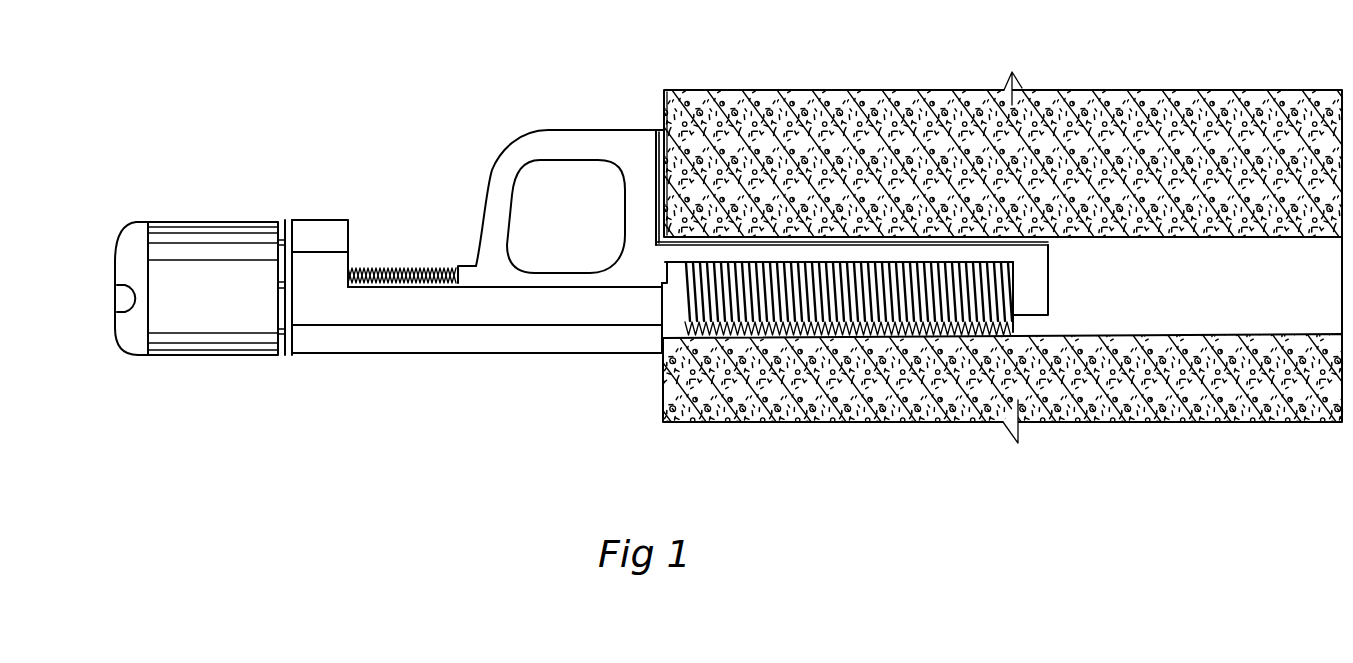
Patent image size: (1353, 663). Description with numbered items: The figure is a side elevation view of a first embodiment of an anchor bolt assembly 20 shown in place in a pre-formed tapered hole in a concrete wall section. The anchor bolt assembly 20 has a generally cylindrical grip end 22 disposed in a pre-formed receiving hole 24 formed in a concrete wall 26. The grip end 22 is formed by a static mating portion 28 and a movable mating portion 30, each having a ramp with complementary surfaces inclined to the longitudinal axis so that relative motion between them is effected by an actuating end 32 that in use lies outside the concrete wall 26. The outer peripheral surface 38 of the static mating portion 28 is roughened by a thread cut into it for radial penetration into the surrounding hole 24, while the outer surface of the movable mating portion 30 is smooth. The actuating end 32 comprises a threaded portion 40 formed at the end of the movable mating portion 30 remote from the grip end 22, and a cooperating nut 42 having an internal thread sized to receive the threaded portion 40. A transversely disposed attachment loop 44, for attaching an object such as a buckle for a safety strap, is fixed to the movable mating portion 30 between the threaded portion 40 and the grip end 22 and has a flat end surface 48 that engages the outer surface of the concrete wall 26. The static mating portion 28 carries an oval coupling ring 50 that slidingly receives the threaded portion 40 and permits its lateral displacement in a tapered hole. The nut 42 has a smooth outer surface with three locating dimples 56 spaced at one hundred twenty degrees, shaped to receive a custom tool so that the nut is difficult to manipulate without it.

The anchor bolt assembly 20 is at (460, 42).
The grip end 22 is at (854, 341).
The receiving hole 24 is at (1172, 240).
The concrete wall 26 is at (1086, 104).
The static mating portion 28 is at (441, 342).
The movable mating portion 30 is at (1035, 280).
The actuating end 32 is at (636, 267).
The outer peripheral surface 38 is at (1013, 329).
The threaded portion 40 is at (436, 272).
The nut 42 is at (172, 267).
The attachment loop 44 is at (590, 130).
The flat end surface 48 is at (666, 153).
The coupling ring 50 is at (334, 218).
The locating dimples 56 is at (117, 297).